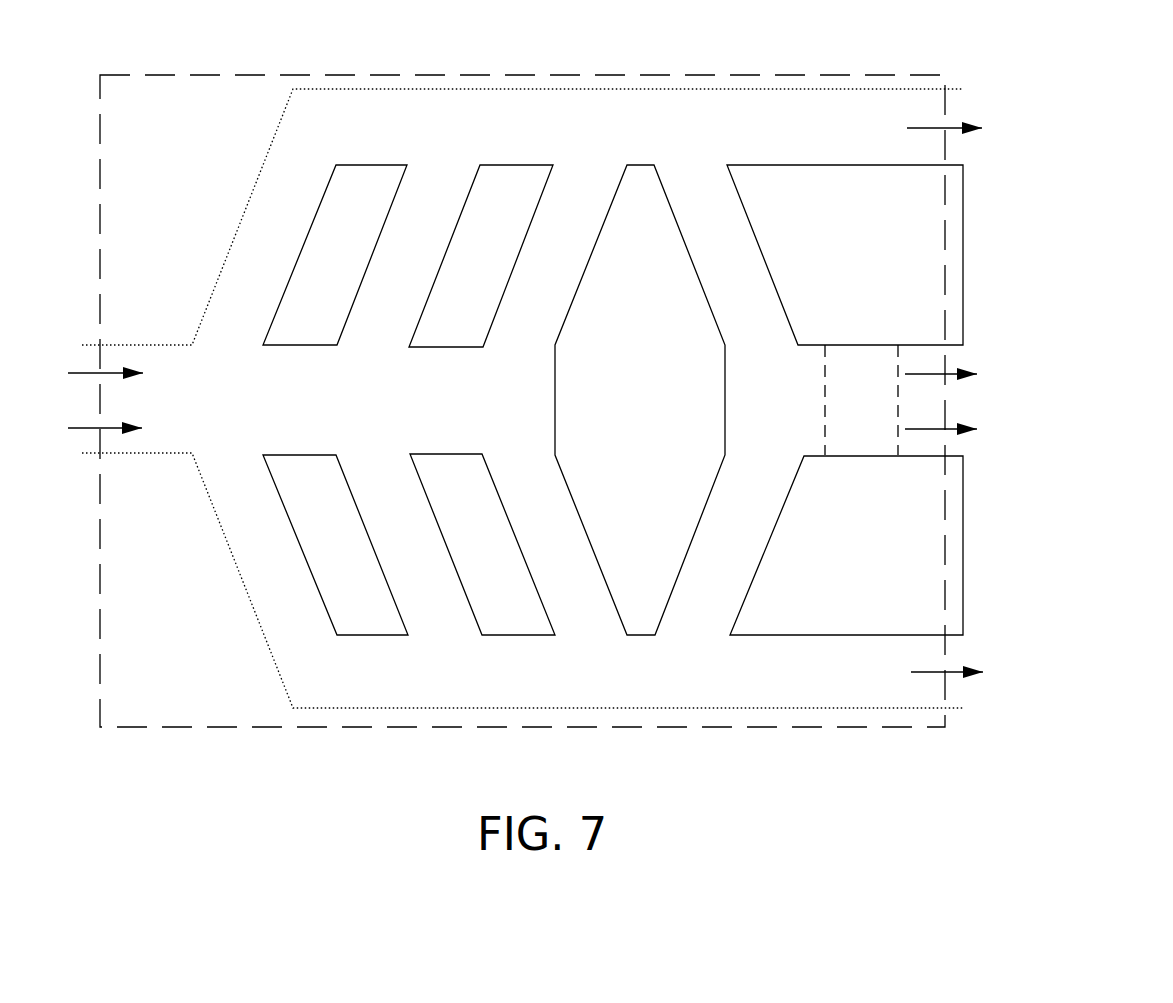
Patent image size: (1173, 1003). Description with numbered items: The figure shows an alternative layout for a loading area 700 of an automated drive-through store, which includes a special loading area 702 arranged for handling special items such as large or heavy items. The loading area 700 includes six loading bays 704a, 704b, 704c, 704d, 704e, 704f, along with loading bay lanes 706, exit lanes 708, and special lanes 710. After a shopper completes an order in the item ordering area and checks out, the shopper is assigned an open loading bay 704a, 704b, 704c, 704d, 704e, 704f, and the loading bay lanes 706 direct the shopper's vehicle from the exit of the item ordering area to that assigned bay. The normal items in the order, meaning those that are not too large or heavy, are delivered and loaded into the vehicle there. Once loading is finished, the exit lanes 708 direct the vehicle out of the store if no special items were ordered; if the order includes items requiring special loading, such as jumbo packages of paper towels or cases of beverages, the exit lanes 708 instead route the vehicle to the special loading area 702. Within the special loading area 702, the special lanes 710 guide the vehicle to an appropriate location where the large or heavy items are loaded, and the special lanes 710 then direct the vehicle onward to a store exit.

The loading area 700 is at (170, 126).
The special loading area 702 is at (880, 386).
The loading bay 704a is at (265, 233).
The loading bay 704b is at (430, 228).
The loading bay 704c is at (575, 217).
The loading bay 704d is at (263, 555).
The loading bay 704e is at (430, 565).
The loading bay 704f is at (575, 562).
The loading bay lanes 706 is at (123, 407).
The exit lanes 708 is at (708, 132).
The special lanes 710 is at (929, 399).